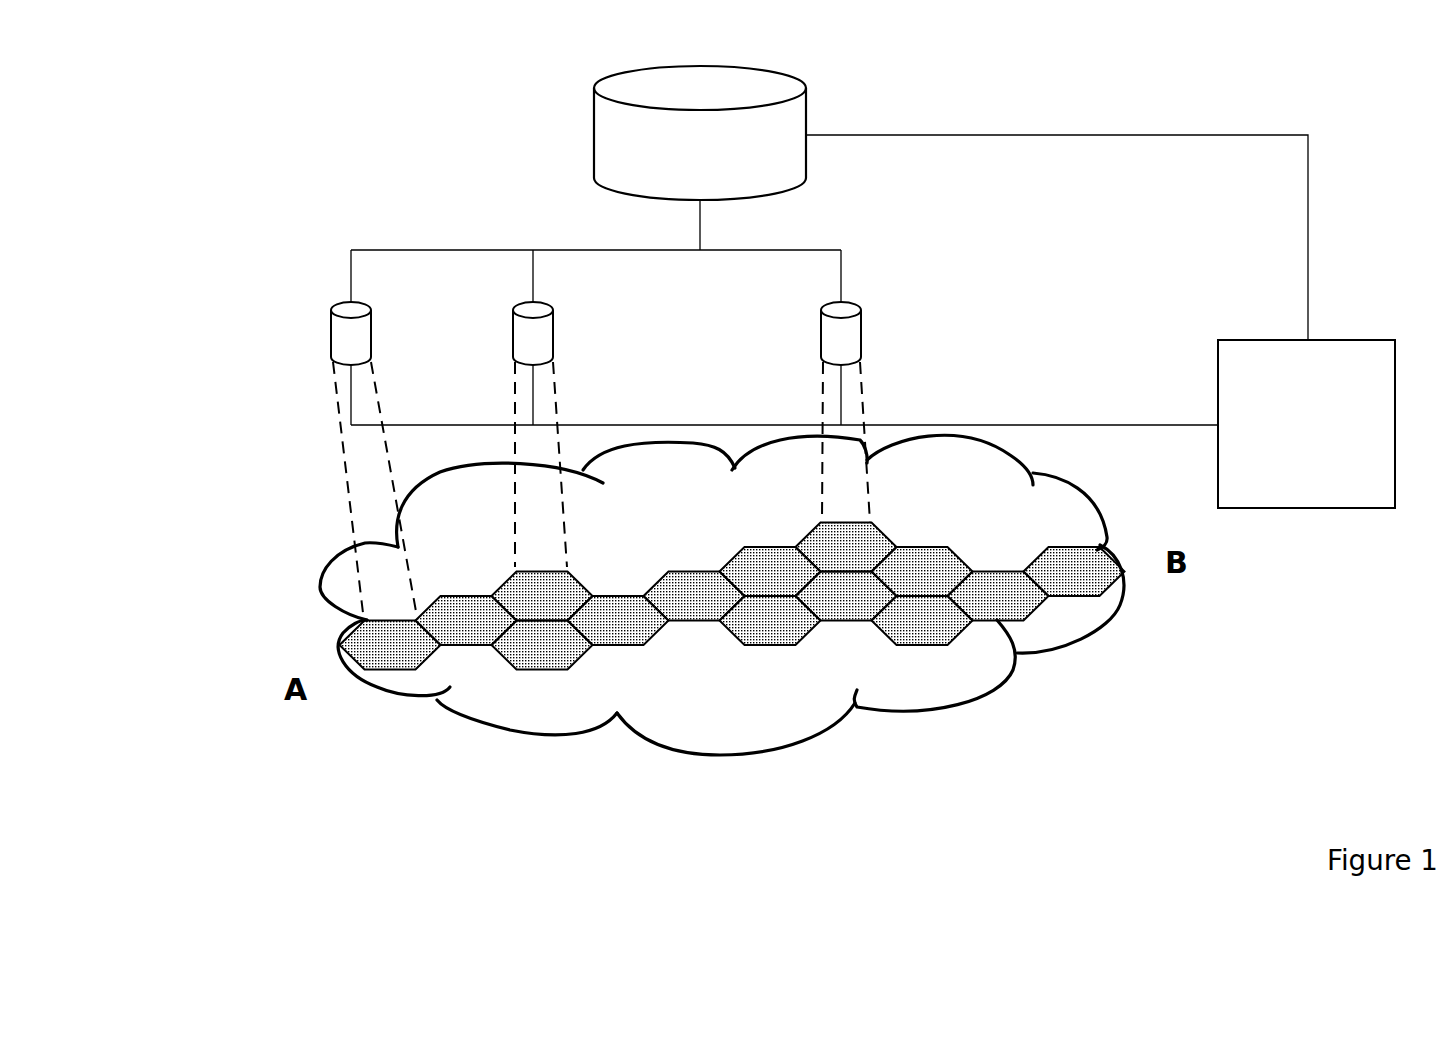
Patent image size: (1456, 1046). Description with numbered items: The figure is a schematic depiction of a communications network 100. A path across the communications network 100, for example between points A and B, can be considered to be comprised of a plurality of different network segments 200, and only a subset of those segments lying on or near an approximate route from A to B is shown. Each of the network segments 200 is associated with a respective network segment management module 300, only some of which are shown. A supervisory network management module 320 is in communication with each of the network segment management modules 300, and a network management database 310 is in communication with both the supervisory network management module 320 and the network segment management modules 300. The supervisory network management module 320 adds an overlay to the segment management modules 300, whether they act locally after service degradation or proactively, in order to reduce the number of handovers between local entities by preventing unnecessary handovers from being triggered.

The communications network 100 is at (722, 757).
The network segments 200 is at (693, 598).
The network segment management modules 300 is at (821, 334).
The network management database 310 is at (1265, 483).
The supervisory network management module 320 is at (594, 135).